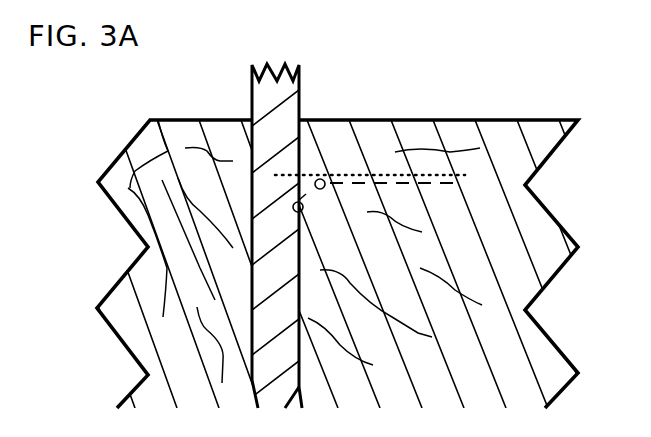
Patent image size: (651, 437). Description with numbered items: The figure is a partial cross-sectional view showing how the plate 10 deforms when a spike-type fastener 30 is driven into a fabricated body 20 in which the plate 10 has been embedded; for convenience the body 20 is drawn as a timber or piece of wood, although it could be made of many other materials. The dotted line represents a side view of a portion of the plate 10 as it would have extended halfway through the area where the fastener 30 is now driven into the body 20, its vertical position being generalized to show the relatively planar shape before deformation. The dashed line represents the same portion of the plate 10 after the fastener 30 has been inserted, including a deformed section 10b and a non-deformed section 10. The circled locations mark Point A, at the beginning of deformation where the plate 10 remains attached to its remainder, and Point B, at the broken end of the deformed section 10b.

The plate 10 is at (388, 168).
The deformed section 10b is at (306, 194).
The fabricated body 20 is at (472, 120).
The spike-type fastener 30 is at (300, 103).
The Point A is at (322, 179).
The Point B is at (298, 208).